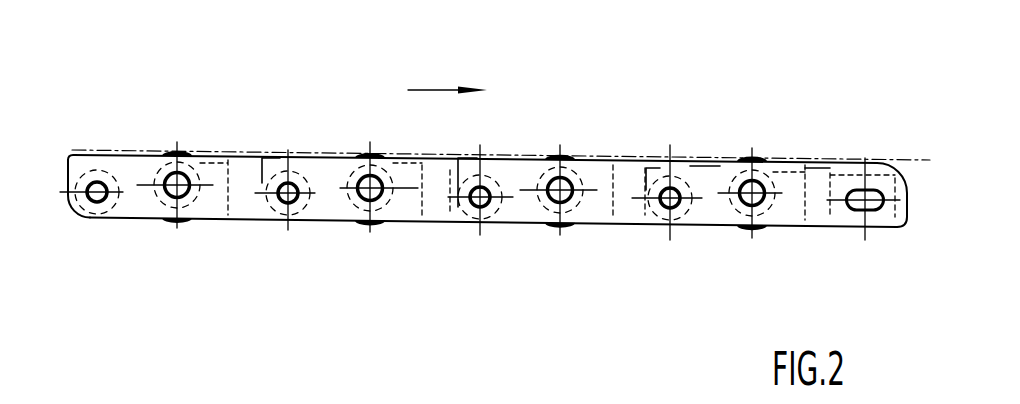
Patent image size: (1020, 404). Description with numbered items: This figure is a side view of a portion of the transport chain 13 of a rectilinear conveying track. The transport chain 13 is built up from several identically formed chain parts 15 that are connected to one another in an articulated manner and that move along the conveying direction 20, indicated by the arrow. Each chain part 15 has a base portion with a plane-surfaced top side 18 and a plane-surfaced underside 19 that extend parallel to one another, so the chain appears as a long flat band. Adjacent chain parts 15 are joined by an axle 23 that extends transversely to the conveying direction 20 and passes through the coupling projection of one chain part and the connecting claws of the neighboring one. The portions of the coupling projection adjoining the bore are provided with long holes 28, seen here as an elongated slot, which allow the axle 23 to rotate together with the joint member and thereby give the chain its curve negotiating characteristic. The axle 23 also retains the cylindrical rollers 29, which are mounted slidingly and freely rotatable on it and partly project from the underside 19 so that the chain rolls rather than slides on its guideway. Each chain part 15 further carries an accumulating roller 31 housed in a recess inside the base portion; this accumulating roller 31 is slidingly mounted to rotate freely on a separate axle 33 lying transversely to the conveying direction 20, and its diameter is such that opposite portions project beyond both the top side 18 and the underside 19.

The transport chain 13 is at (726, 136).
The chain part 15 is at (695, 168).
The top side 18 is at (508, 157).
The underside 19 is at (817, 228).
The conveying direction 20 is at (447, 76).
The axle 23 is at (660, 210).
The long hole 28 is at (876, 215).
The roller 29 is at (472, 208).
The accumulating roller 31 is at (568, 228).
The axle 33 is at (740, 205).